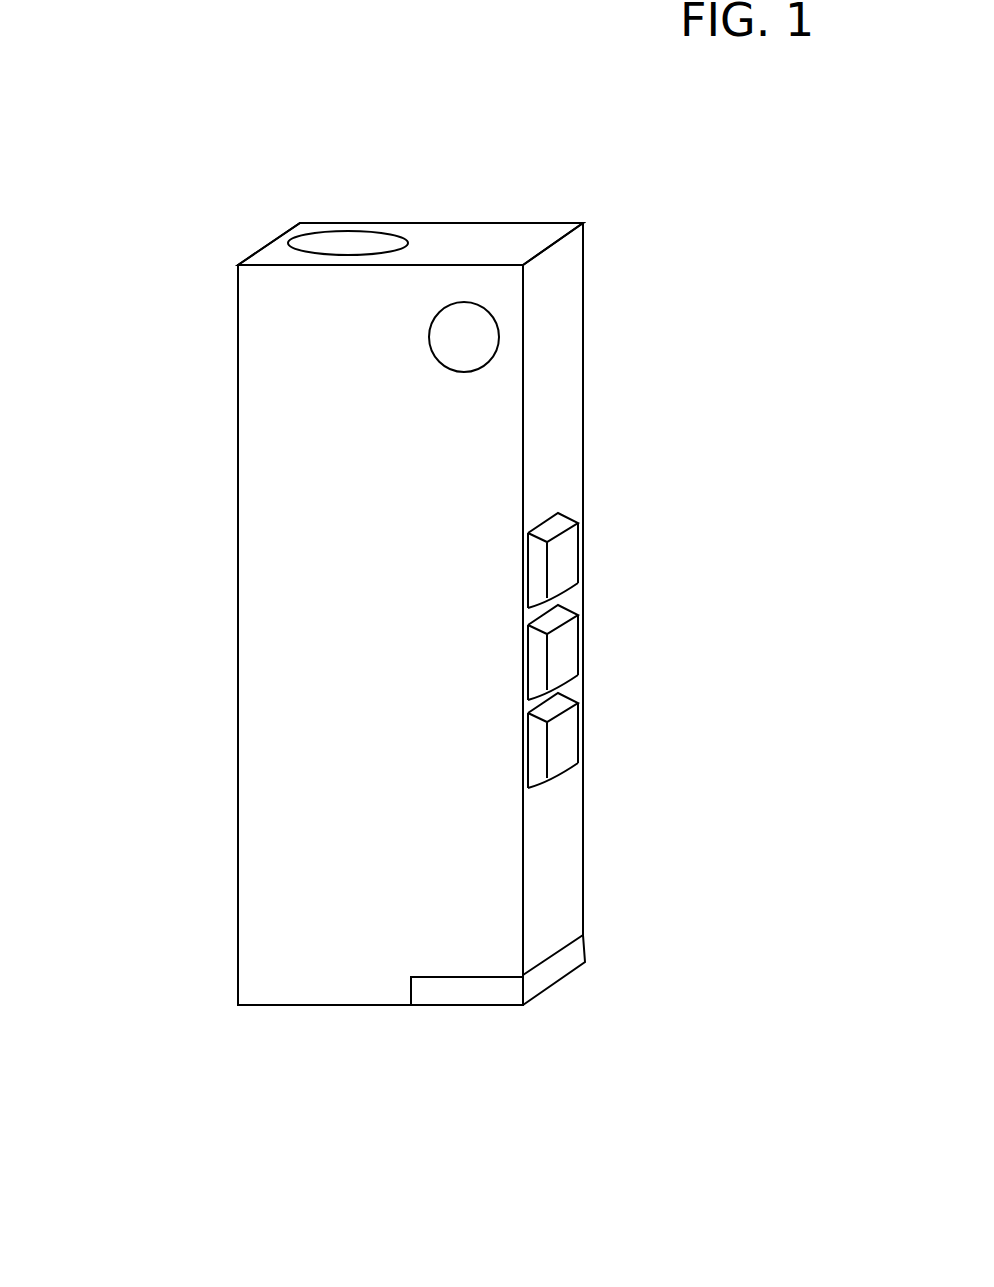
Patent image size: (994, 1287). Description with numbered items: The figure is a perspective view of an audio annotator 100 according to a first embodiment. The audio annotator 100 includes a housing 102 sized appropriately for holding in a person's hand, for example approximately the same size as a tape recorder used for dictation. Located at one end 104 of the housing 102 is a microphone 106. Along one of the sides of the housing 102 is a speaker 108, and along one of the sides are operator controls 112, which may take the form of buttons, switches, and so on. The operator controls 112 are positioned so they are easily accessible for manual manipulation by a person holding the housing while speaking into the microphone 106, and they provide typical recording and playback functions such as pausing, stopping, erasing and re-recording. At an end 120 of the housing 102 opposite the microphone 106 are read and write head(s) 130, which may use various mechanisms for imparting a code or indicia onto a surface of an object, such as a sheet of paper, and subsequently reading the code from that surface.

The audio annotator 100 is at (471, 582).
The housing 102 is at (239, 773).
The end of the housing 104 is at (238, 262).
The microphone 106 is at (317, 232).
The speaker 108 is at (454, 374).
The operator controls 112 is at (638, 695).
The end of the housing opposite the microphone 120 is at (238, 1007).
The read and write head(s) 130 is at (483, 1015).